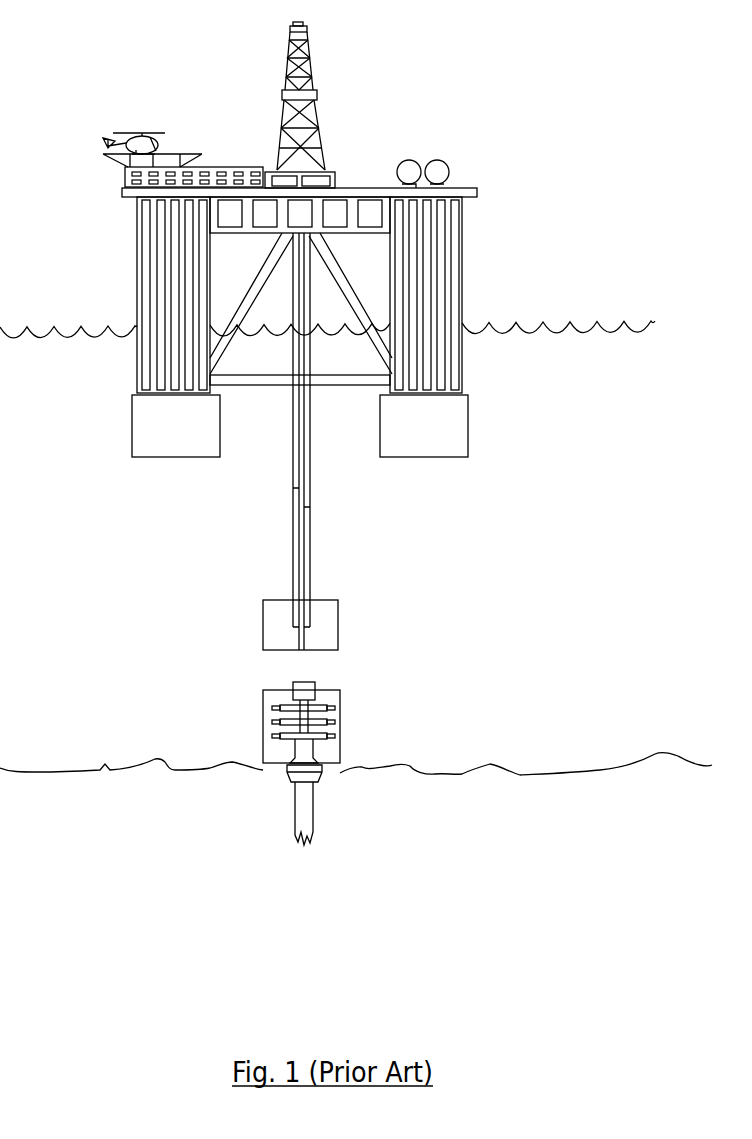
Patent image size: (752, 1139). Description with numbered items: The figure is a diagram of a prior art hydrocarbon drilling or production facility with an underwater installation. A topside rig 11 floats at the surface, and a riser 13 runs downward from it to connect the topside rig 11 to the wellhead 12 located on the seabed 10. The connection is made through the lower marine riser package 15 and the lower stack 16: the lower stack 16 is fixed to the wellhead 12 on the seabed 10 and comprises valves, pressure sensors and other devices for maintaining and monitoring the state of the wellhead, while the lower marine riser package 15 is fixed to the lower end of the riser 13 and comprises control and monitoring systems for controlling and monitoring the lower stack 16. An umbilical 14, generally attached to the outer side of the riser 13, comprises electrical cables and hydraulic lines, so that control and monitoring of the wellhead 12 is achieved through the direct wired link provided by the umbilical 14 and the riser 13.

The seabed 10 is at (356, 785).
The topside rig 11 is at (460, 218).
The wellhead 12 is at (322, 777).
The riser 13 is at (310, 533).
The umbilical 14 is at (295, 520).
The lower marine riser package 15 is at (338, 627).
The lower stack 16 is at (263, 712).